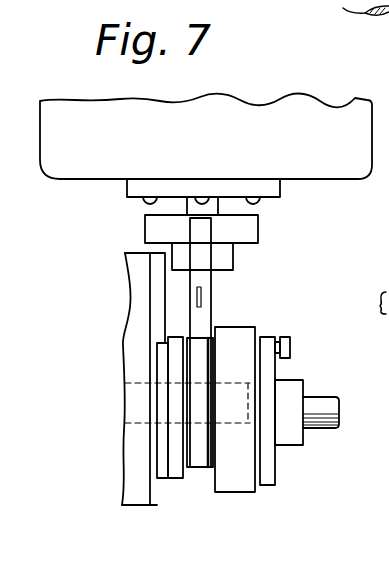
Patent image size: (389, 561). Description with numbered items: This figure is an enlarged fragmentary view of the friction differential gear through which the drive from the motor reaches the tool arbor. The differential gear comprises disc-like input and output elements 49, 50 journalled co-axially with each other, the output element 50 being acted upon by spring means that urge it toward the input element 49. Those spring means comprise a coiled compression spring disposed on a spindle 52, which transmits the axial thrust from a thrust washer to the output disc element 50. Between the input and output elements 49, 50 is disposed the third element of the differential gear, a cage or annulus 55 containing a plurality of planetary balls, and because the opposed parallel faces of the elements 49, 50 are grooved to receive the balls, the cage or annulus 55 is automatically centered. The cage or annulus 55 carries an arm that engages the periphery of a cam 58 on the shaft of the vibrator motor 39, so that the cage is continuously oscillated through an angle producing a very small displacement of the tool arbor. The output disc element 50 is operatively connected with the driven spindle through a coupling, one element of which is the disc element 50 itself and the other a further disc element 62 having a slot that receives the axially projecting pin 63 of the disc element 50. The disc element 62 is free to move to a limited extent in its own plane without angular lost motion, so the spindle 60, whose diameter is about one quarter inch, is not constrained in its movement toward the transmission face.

The vibrator motor 39 is at (237, 120).
The cam 58 is at (240, 232).
The cage or annulus 55 is at (212, 318).
The spindle 52 is at (122, 377).
The input element 49 is at (169, 478).
The output element 50 is at (233, 477).
The disc element 62 is at (267, 375).
The axially projecting pin 63 is at (278, 337).
The spindle 60 is at (320, 407).